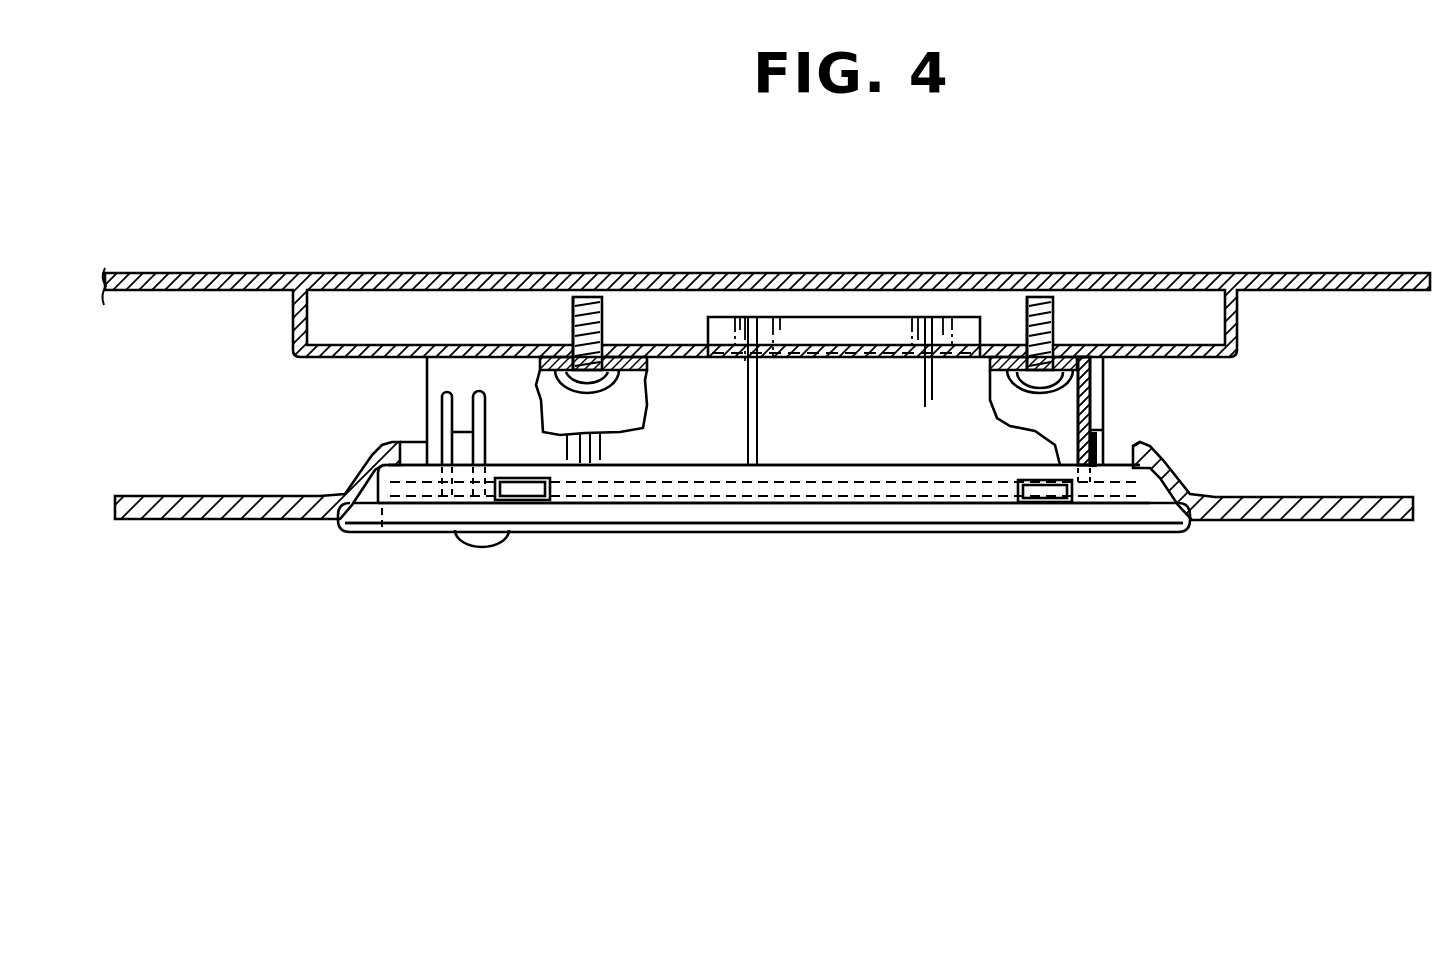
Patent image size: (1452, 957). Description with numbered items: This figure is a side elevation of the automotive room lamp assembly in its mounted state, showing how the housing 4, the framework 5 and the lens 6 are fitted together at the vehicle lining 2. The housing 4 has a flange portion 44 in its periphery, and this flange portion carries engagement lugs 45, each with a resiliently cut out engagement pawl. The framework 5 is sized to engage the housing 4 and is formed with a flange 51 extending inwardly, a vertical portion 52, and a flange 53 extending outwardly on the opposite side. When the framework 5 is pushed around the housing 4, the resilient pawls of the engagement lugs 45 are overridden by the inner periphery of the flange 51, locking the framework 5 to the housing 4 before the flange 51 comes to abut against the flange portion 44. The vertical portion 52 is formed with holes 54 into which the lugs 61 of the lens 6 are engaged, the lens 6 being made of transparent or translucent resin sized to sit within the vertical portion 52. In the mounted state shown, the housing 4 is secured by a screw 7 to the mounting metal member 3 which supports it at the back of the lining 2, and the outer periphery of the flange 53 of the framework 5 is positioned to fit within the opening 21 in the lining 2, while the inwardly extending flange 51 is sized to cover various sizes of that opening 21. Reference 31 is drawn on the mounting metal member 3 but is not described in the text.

The lining 2 is at (1312, 524).
The opening 21 is at (1127, 456).
The mounting metal member 3 is at (1248, 346).
The bolt hole / mounting portion of upper plate 31 is at (578, 330).
The housing 4 is at (832, 388).
The flange portion 44 is at (1097, 494).
The engagement lug 45 is at (467, 450).
The framework 5 is at (678, 458).
The flange 51 is at (822, 430).
The vertical portion 52 is at (886, 492).
The flange 53 is at (897, 516).
The holes 54 is at (525, 476).
The lens 6 is at (745, 538).
The lugs 61 is at (533, 492).
The screw 7 is at (587, 296).